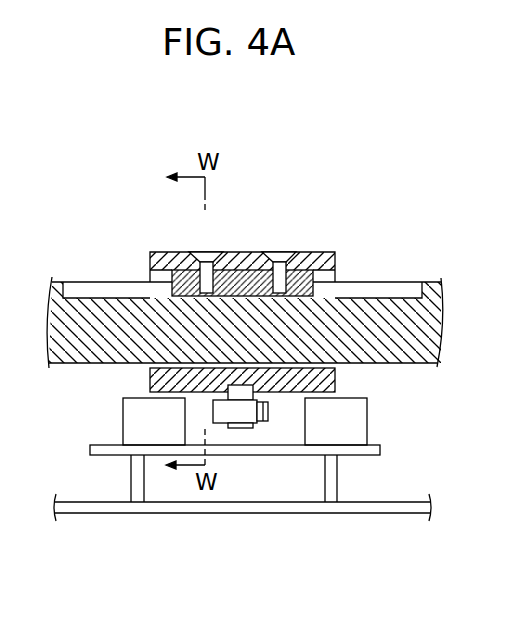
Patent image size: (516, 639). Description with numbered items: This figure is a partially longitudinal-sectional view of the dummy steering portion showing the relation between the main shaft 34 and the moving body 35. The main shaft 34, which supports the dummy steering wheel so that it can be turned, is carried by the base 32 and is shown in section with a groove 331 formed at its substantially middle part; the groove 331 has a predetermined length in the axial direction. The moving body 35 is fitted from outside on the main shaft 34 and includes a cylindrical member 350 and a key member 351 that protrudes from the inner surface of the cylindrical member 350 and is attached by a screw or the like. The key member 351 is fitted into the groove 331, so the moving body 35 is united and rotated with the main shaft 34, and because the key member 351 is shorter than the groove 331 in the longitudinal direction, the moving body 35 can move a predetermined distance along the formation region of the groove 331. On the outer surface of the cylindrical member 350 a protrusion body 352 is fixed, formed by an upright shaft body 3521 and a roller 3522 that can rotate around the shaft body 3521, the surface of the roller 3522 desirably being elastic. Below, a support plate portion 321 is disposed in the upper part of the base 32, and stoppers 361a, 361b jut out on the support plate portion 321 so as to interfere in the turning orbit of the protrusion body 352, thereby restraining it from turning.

The base 32 is at (395, 508).
The support plate portion 321 is at (138, 475).
The groove 331 is at (105, 291).
The main shaft 34 is at (413, 316).
The moving body 35 is at (239, 222).
The cylindrical member 350 is at (168, 252).
The key member 351 is at (242, 253).
The protrusion body 352 is at (252, 500).
The shaft body 3521 is at (265, 388).
The roller 3522 is at (220, 422).
The stopper 361a is at (137, 424).
The stopper 361b is at (347, 424).